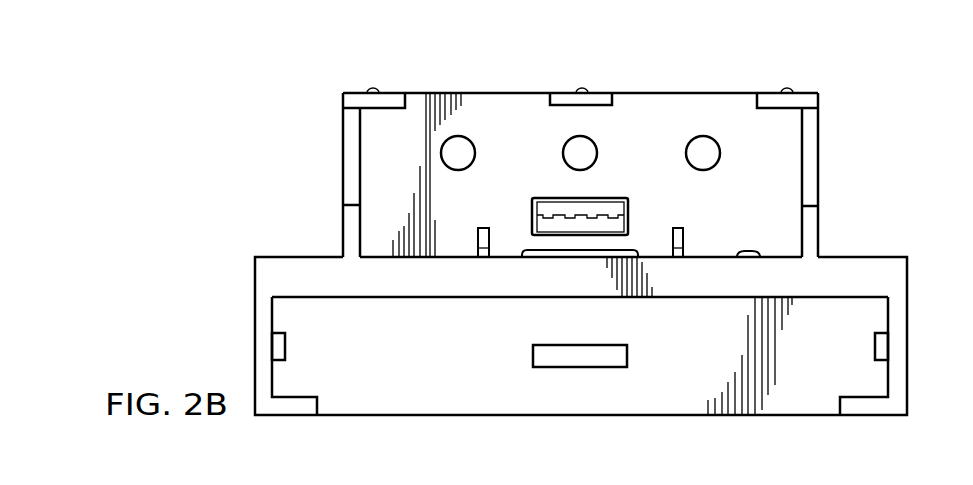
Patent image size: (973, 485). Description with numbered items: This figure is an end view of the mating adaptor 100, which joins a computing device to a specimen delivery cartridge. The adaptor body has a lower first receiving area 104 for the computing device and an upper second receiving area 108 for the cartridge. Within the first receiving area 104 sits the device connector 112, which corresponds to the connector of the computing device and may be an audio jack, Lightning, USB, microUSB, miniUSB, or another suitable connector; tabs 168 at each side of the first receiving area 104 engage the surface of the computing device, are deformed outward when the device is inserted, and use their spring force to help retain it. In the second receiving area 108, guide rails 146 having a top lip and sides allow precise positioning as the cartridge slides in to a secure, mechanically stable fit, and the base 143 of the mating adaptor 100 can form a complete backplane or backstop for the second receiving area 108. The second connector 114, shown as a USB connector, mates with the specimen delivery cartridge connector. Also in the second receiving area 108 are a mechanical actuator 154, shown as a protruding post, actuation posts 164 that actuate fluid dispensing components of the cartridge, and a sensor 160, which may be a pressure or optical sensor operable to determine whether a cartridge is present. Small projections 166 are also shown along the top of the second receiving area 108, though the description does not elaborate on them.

The mating adaptor 100 is at (264, 82).
The second receiving area 108 is at (527, 107).
The base 143 is at (668, 100).
The guide rails 146 is at (348, 157).
The protrusions 166 is at (373, 88).
The actuation posts 164 is at (475, 153).
The second connector 114 is at (532, 210).
The mechanical actuator 154 is at (678, 228).
The sensor 160 is at (748, 251).
The first receiving area 104 is at (882, 380).
The tabs 168 is at (285, 345).
The device connector 112 is at (627, 356).